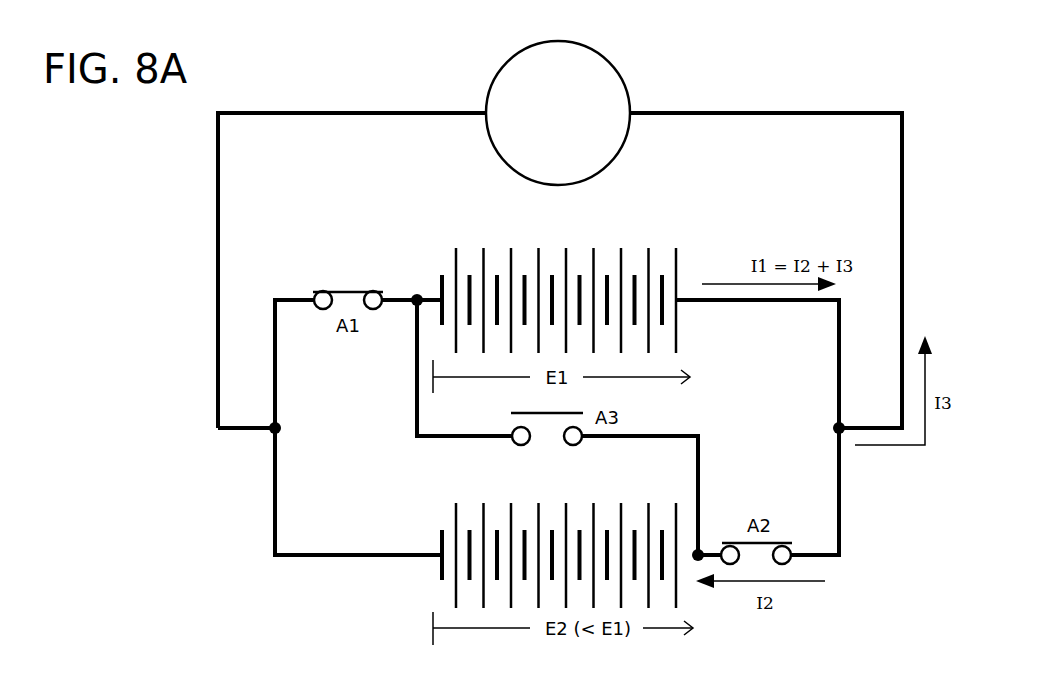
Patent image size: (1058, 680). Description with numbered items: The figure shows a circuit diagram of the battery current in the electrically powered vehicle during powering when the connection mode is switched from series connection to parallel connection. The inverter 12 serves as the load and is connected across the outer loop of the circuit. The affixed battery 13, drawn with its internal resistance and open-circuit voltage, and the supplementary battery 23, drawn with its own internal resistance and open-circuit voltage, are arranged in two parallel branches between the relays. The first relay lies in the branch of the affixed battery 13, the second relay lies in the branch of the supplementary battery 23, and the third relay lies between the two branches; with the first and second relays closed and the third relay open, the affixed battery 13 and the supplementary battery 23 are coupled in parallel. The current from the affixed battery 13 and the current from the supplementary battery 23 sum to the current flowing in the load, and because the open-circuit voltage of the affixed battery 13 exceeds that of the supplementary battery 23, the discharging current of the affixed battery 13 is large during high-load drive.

The inverter 12 is at (617, 66).
The affixed battery 13 is at (638, 242).
The supplementary battery 23 is at (624, 503).